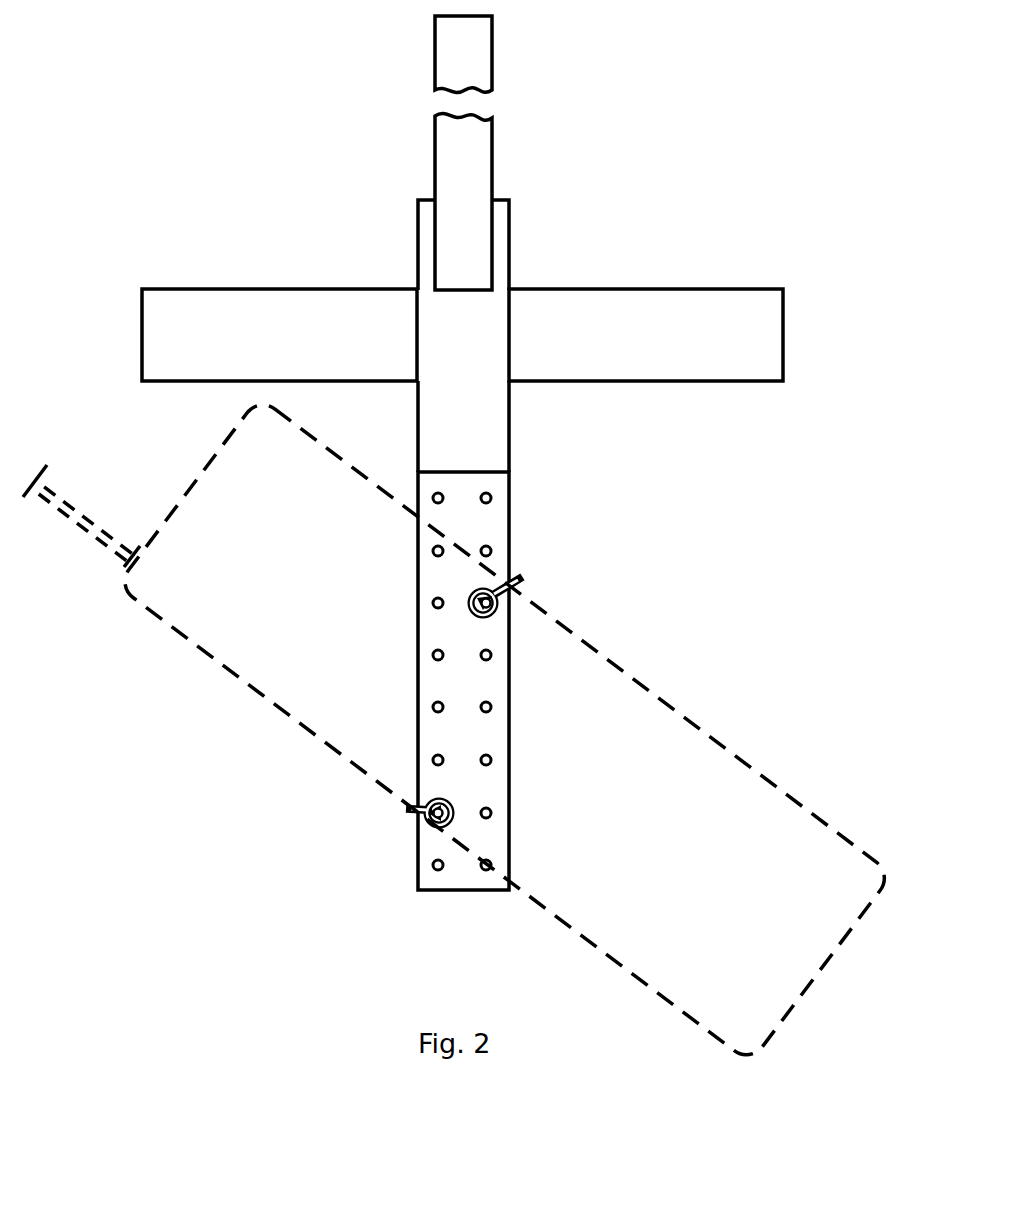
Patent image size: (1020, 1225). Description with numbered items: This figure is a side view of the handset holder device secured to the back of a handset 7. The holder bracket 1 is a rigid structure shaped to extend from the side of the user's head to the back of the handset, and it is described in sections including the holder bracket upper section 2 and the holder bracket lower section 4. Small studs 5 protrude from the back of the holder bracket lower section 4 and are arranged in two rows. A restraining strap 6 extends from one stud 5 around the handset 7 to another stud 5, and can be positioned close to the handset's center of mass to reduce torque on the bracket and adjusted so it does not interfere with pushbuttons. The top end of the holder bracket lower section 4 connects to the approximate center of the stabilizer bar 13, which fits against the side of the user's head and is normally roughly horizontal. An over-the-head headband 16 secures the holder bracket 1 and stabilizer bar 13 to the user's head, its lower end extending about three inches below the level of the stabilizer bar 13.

The holder bracket 1 is at (512, 468).
The holder bracket upper section 2 is at (490, 400).
The holder bracket lower section 4 is at (483, 537).
The studs 5 is at (433, 760).
The restraining strap 6 is at (522, 582).
The handset 7 is at (682, 745).
The stabilizer bar 13 is at (730, 358).
The over-the-head headband 16 is at (482, 158).